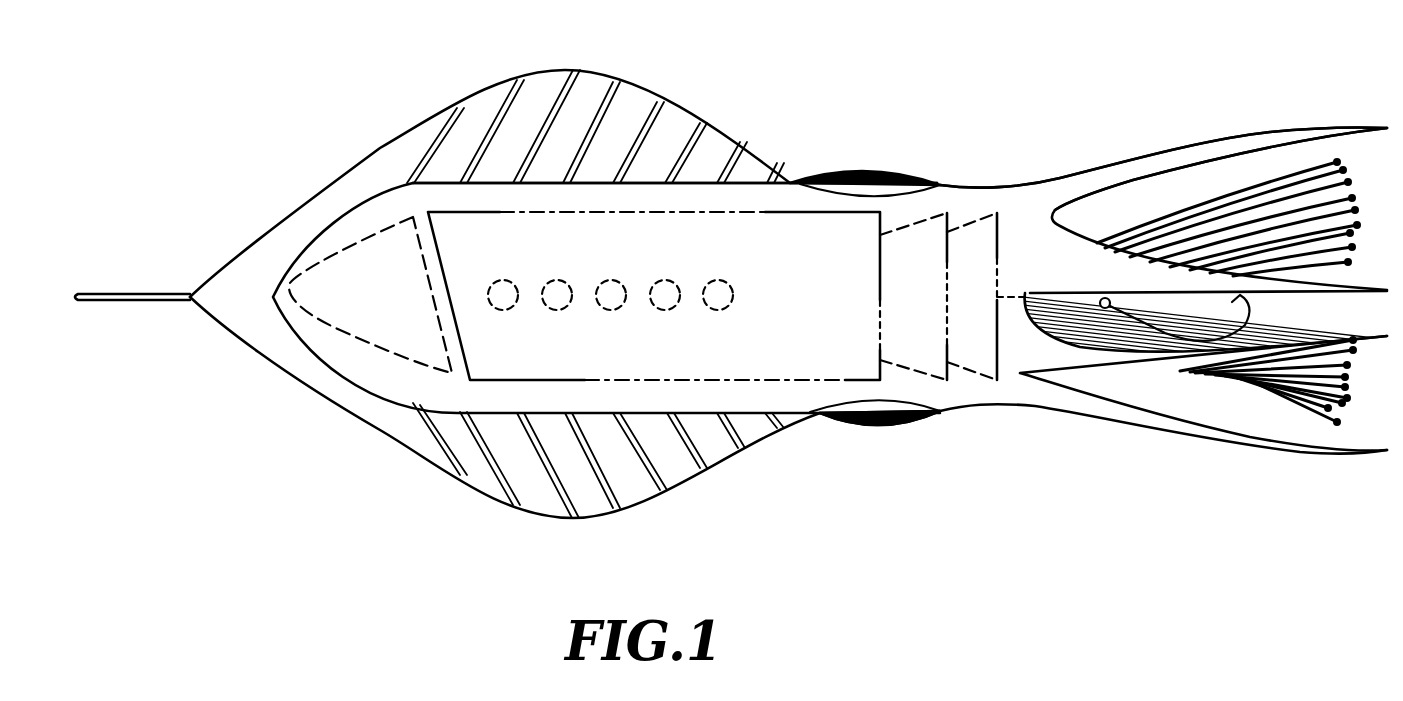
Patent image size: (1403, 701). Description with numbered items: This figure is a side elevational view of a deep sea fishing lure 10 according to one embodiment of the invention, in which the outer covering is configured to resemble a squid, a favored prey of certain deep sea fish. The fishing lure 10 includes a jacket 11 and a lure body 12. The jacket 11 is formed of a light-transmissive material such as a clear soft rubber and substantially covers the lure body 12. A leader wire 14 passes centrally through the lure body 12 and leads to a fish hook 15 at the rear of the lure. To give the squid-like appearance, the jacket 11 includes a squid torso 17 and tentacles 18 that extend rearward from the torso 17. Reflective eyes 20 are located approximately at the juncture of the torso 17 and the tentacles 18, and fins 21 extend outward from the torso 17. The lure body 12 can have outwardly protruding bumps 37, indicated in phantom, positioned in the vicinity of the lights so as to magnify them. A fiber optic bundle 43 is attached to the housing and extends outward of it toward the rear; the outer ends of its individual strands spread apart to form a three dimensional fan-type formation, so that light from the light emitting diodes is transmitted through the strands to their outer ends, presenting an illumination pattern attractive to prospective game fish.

The deep sea fishing lure 10 is at (783, 92).
The jacket 11 is at (680, 108).
The lure body 12 is at (753, 380).
The leader wire 14 is at (148, 290).
The fish hook 15 is at (1296, 306).
The squid torso 17 is at (785, 205).
The tentacles 18 is at (1142, 167).
The reflective eyes 20 is at (893, 422).
The fins 21 is at (670, 472).
The outwardly protruding bumps 37 is at (553, 282).
The fiber optic bundle 43 is at (1277, 190).